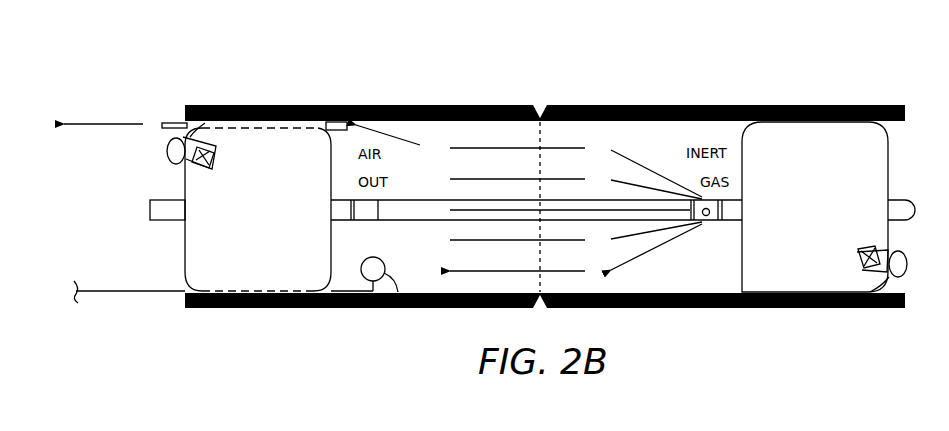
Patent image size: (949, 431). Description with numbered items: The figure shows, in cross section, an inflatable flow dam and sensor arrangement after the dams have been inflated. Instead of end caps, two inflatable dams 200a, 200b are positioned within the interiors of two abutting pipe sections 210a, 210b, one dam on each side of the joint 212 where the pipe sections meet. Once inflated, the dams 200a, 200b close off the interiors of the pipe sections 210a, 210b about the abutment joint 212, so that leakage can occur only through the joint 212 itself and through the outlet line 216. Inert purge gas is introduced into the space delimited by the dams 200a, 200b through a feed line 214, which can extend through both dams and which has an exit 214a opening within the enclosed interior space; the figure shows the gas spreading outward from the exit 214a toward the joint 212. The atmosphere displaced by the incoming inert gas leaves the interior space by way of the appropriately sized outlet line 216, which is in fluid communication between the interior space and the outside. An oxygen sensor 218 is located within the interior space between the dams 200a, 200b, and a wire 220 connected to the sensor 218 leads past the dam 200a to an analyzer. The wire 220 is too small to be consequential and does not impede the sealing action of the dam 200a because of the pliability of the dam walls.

The inflatable dam 200a is at (248, 206).
The inflatable dam 200b is at (828, 207).
The pipe section 210a is at (342, 106).
The pipe section 210b is at (666, 106).
The joint 212 is at (544, 100).
The feed line 214 is at (444, 198).
The exit 214a is at (706, 216).
The outlet line 216 is at (174, 122).
The oxygen sensor 218 is at (400, 309).
The wire 220 is at (128, 291).